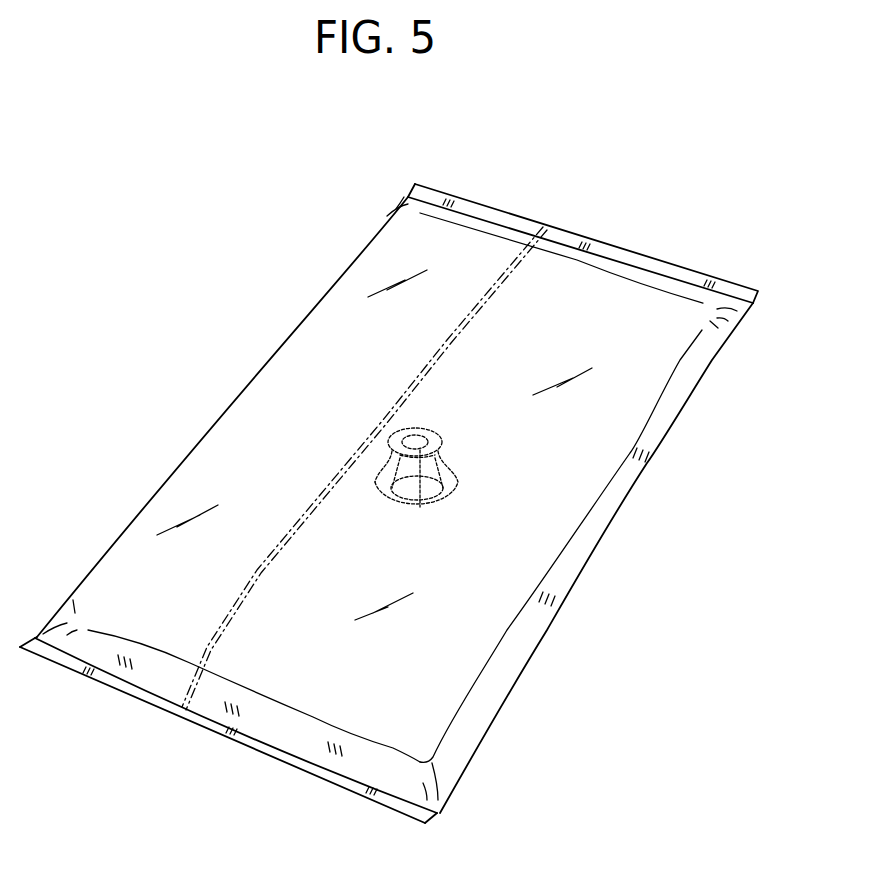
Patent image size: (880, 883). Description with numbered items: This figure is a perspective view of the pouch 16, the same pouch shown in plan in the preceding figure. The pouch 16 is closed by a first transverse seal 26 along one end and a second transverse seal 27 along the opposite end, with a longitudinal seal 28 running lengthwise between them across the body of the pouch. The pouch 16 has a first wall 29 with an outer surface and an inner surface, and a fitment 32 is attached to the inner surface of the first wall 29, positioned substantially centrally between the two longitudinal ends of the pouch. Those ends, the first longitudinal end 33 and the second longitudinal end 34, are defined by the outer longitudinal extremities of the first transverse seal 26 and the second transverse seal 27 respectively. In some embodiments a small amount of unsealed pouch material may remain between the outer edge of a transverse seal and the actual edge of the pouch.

The pouch 16 is at (275, 287).
The first transverse seal 26 is at (470, 207).
The second transverse seal 27 is at (132, 690).
The longitudinal seal 28 is at (463, 324).
The first wall 29 is at (323, 399).
The fitment 32 is at (440, 430).
The first longitudinal end 33 is at (652, 253).
The second longitudinal end 34 is at (317, 777).